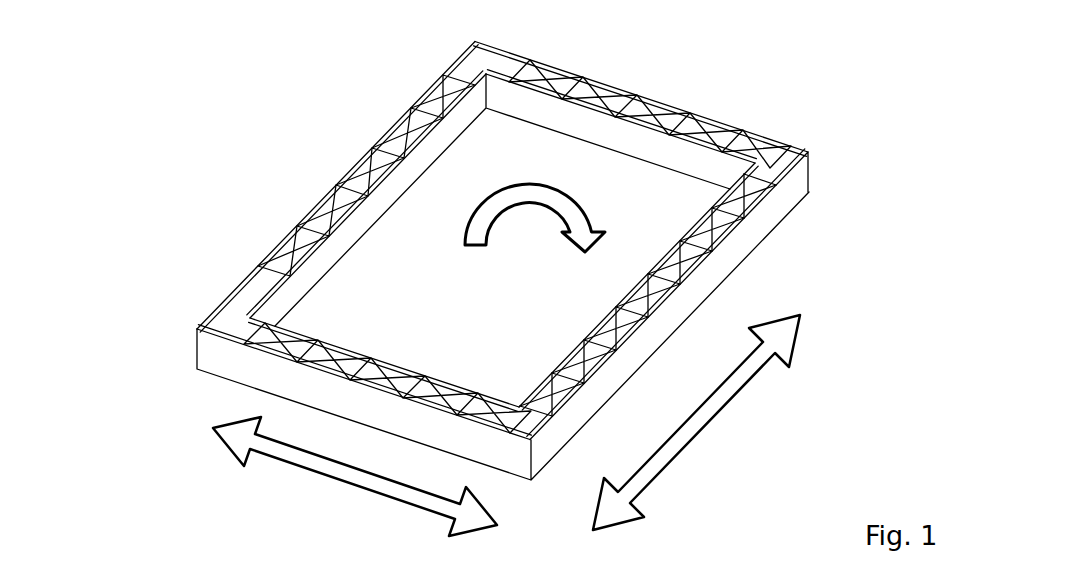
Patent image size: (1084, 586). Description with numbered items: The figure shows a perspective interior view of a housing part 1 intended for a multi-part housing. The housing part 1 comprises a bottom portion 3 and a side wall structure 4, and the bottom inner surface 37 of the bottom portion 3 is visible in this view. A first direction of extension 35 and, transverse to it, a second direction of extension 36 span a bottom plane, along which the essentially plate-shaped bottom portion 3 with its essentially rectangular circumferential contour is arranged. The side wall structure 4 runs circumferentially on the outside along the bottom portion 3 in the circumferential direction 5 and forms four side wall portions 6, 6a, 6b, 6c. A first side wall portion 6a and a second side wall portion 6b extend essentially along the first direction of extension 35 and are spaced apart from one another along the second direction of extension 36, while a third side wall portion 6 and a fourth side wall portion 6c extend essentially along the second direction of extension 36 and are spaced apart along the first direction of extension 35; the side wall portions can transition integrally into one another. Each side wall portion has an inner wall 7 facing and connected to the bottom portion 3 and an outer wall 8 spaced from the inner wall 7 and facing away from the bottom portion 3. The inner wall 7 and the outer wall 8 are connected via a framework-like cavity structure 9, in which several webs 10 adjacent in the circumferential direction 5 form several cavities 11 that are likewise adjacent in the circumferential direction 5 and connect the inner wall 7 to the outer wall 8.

The housing part 1 is at (87, 46).
The bottom portion 3 is at (503, 165).
The bottom inner surface 37 is at (502, 200).
The side wall structure 4 is at (115, 228).
The circumferential direction 5 is at (555, 202).
The third side wall portion 6 is at (593, 93).
The first side wall portion 6a is at (620, 297).
The second side wall portion 6b is at (293, 235).
The fourth side wall portion 6c is at (337, 358).
The inner wall 7 is at (687, 152).
The outer wall 8 is at (795, 175).
The cavity structure 9 is at (857, 228).
The webs 10 is at (680, 264).
The cavities 11 is at (640, 305).
The first direction of extension 35 is at (783, 335).
The second direction of extension 36 is at (245, 440).